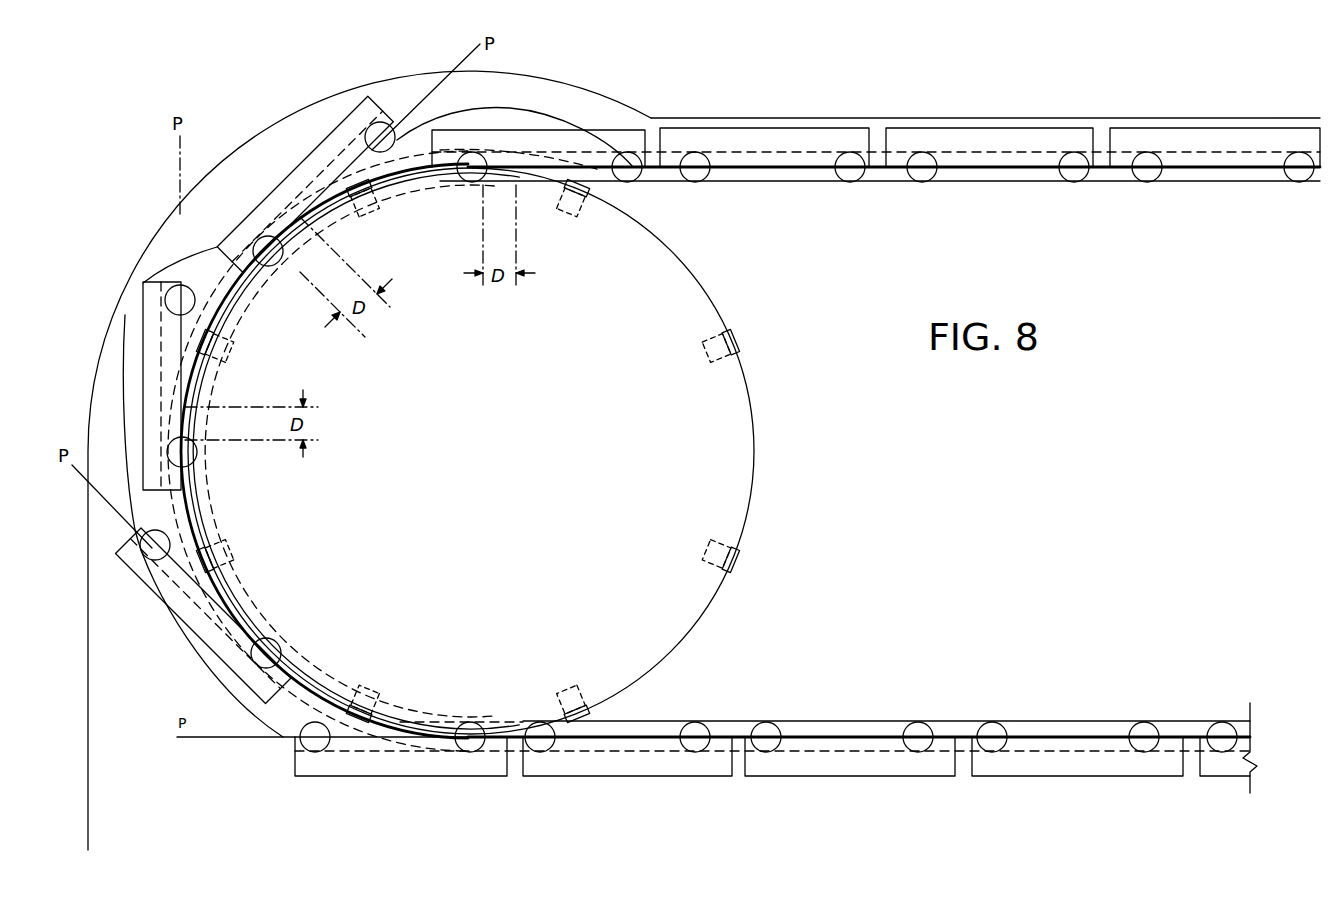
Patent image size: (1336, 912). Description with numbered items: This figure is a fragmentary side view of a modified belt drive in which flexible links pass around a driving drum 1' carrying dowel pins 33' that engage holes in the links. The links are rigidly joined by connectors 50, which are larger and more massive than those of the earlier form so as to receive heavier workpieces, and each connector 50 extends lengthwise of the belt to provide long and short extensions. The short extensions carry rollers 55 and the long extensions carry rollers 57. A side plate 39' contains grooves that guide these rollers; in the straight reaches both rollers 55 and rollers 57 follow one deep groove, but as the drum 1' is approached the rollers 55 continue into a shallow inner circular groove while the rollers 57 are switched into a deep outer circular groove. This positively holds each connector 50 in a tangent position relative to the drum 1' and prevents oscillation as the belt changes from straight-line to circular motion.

The driving drum 1' is at (471, 451).
The side plate 39' is at (704, 460).
The connector 50 is at (542, 124).
The roller 55 is at (282, 256).
The roller 57 is at (392, 128).
The dowel pin 33' is at (499, 450).